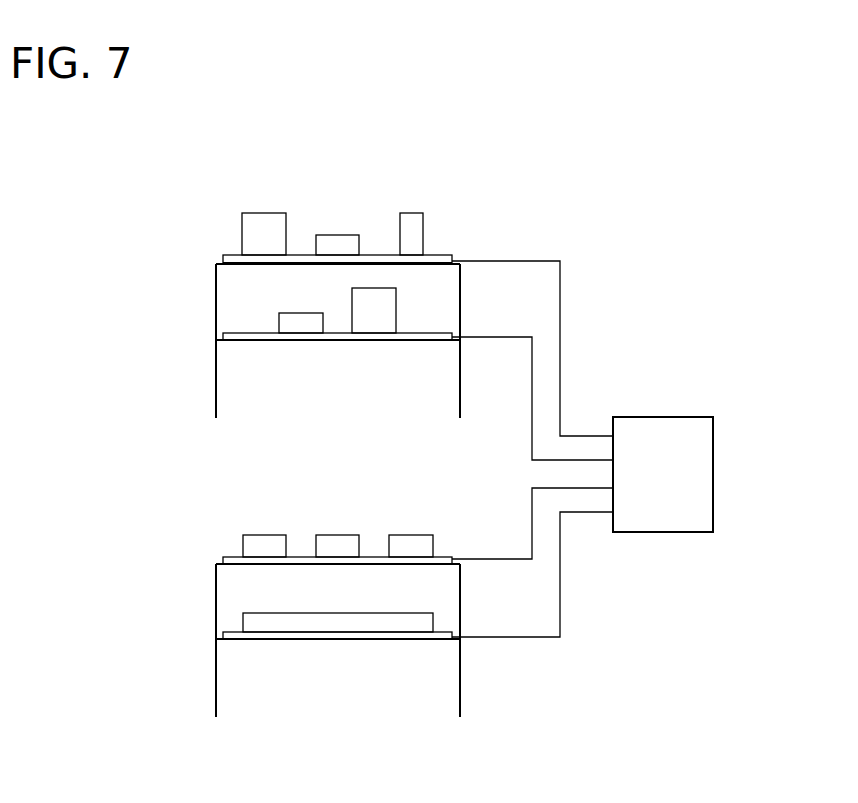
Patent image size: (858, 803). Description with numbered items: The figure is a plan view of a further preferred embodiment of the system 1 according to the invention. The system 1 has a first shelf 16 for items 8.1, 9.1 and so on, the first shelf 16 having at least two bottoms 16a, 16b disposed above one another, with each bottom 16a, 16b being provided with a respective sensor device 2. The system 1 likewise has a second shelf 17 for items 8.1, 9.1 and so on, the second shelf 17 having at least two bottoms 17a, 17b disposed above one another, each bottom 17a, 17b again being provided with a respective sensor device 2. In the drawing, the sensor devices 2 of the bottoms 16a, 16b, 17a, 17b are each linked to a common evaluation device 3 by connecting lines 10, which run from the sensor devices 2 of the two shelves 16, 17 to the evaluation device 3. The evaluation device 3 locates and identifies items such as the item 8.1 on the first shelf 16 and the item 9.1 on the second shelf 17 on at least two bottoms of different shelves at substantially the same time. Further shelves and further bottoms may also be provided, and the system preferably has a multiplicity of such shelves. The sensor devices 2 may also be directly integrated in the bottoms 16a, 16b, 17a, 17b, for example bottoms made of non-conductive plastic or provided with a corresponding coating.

The system 1 is at (750, 306).
The sensor device 2 is at (225, 258).
The evaluation device 3 is at (683, 470).
The item 8.1 is at (413, 236).
The item 9.1 is at (416, 623).
The connection lines 10 is at (602, 512).
The first shelf 16 is at (263, 342).
The bottom 16a is at (253, 264).
The bottom 16b is at (266, 342).
The second shelf 17 is at (263, 642).
The bottom 17a is at (253, 565).
The bottom 17b is at (266, 642).